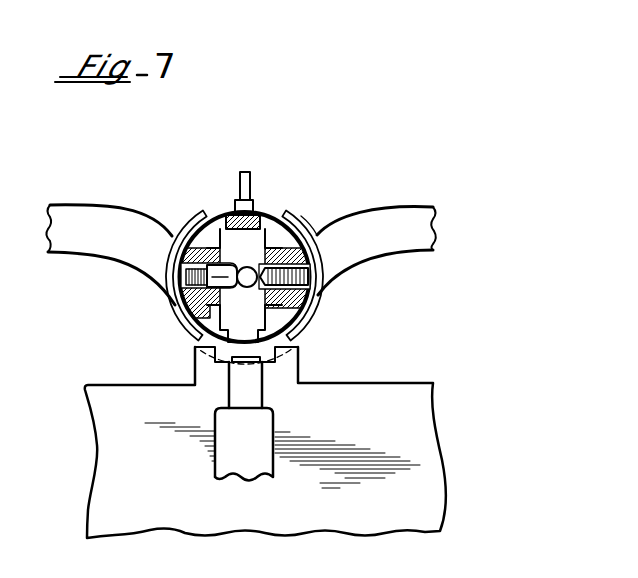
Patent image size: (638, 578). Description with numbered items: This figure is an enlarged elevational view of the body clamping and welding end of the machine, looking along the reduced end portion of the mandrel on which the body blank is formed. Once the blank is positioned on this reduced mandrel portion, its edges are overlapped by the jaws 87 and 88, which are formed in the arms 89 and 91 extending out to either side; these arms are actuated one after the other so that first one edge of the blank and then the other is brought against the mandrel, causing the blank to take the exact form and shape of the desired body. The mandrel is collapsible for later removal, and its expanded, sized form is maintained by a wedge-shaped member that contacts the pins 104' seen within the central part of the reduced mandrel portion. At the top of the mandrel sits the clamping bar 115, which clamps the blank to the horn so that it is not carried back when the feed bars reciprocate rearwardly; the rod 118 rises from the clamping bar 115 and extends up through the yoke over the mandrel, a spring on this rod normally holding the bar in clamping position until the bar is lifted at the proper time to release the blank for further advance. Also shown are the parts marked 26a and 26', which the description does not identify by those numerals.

The arm 91 is at (92, 222).
The arm 89 is at (402, 217).
The jaw 88 is at (188, 323).
The jaw 87 is at (302, 322).
The bearing ring 26a is at (205, 238).
The bearing core 26' is at (254, 266).
The pins 104' is at (165, 291).
The rod 118 is at (252, 186).
The clamping bar 115 is at (251, 206).